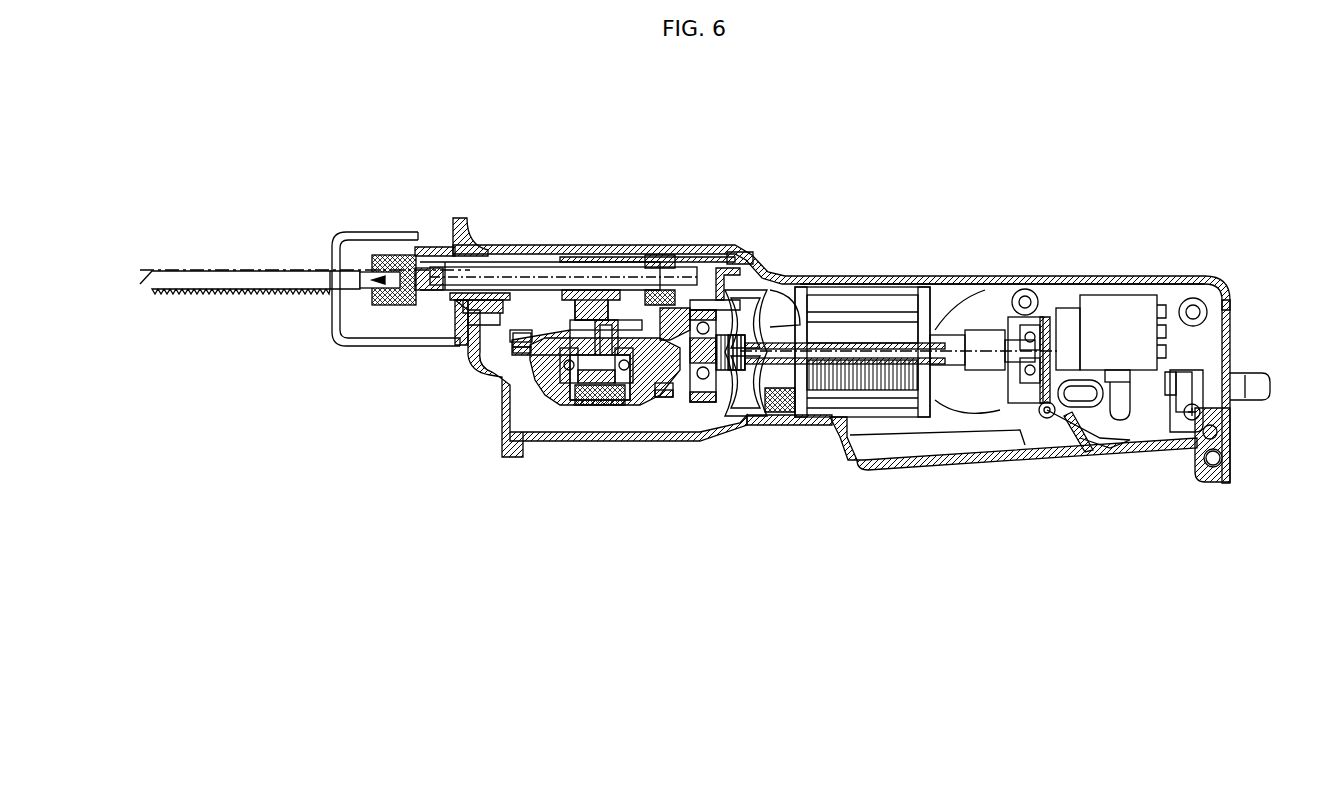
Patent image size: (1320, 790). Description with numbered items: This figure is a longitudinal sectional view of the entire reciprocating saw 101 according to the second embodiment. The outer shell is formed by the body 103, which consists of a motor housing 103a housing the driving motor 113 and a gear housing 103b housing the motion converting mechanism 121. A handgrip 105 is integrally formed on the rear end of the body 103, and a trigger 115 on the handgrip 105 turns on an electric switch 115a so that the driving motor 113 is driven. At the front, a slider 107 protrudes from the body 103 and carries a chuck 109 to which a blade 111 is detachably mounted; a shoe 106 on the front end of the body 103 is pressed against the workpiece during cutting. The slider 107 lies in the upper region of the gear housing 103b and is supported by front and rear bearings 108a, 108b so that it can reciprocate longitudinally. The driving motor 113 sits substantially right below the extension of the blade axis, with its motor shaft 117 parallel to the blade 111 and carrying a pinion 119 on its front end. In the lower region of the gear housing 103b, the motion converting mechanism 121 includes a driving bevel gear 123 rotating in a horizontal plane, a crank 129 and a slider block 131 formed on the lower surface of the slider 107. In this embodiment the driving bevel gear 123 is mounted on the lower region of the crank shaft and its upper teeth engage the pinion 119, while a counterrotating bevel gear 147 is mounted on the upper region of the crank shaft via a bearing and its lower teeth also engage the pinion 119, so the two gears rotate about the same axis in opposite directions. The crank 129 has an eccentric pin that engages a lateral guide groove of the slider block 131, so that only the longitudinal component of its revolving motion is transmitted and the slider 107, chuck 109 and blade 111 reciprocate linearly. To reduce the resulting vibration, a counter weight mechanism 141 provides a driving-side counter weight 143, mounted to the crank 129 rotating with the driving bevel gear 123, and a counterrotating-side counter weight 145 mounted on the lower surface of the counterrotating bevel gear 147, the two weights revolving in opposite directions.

The reciprocating saw 101 is at (1093, 246).
The body 103 is at (770, 264).
The motor housing 103a is at (887, 283).
The gear housing 103b is at (450, 322).
The handgrip 105 is at (1029, 290).
The shoe 106 is at (334, 318).
The slider 107 is at (490, 312).
The front bearing 108a is at (492, 252).
The rear bearing 108b is at (656, 290).
The chuck 109 is at (386, 250).
The blade 111 is at (222, 270).
The driving motor 113 is at (880, 392).
The trigger 115 is at (965, 455).
The electric switch 115a is at (1150, 308).
The motor shaft 117 is at (779, 356).
The pinion 119 is at (660, 398).
The motion converting mechanism 121 is at (628, 398).
The driving bevel gear 123 is at (560, 388).
The crank 129 is at (600, 330).
The slider block 131 is at (582, 308).
The counter weight mechanism 141 is at (639, 312).
The driving-side counter weight 143 is at (686, 333).
The counterrotating-side counter weight 145 is at (700, 388).
The counterrotating bevel gear 147 is at (548, 335).